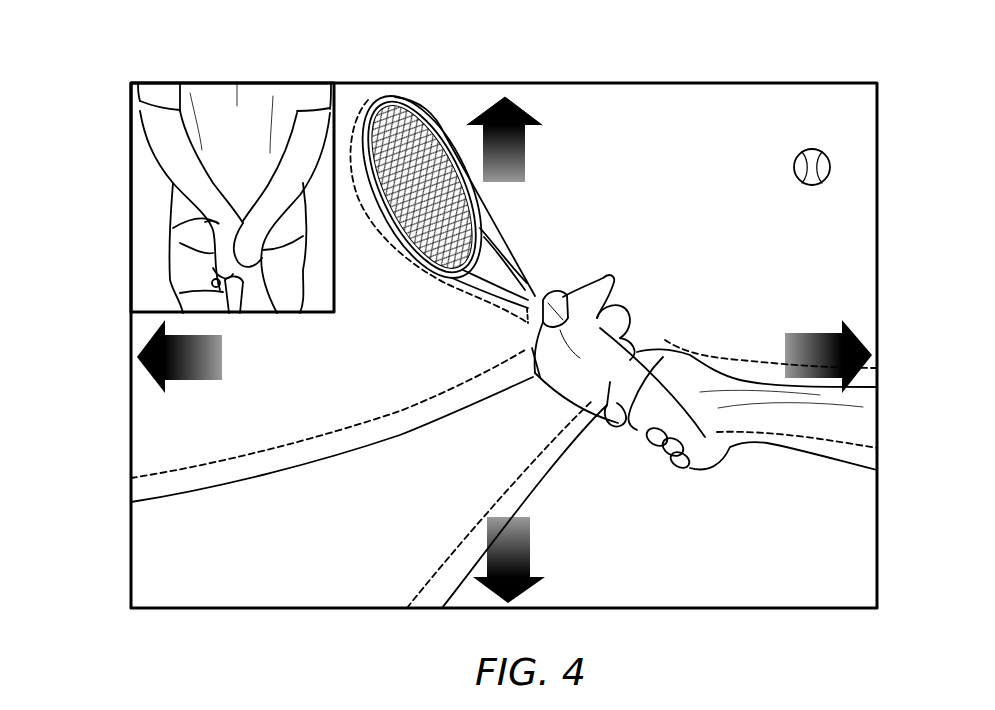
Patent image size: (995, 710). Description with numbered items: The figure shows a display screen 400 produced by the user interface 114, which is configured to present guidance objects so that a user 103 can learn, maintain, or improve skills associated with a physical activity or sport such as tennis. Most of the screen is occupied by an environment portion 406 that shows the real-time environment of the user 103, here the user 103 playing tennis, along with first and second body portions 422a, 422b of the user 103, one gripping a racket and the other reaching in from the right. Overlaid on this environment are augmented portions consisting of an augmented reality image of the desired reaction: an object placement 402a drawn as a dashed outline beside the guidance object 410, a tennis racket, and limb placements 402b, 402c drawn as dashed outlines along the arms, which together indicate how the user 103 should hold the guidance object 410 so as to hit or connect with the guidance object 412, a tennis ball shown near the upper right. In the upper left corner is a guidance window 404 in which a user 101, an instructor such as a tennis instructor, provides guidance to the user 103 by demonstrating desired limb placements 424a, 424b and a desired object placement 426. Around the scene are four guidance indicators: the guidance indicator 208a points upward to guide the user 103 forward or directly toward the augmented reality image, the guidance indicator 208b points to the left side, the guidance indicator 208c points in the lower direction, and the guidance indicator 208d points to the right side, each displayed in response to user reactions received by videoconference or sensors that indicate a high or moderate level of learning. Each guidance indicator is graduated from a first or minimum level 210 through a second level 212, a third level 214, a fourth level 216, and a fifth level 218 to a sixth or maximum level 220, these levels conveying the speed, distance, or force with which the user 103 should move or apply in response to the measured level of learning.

The display screen 400 is at (196, 54).
The user 101 is at (238, 95).
The object placement 402a is at (360, 108).
The limb placement 402b is at (527, 478).
The limb placement 402c is at (763, 428).
The guidance object 410 is at (393, 99).
The guidance indicator 208a is at (482, 150).
The guidance indicator 208b is at (195, 382).
The guidance indicator 208c is at (532, 536).
The guidance indicator 208d is at (814, 333).
The sixth or maximum level 220 is at (522, 108).
The fifth level 218 is at (527, 140).
The fourth level 216 is at (527, 152).
The third level 214 is at (527, 160).
The second level 212 is at (527, 170).
The first or minimum level 210 is at (527, 182).
The user interface 114 is at (617, 83).
The guidance object 412 is at (812, 186).
The guidance window 404 is at (147, 182).
The desired limb placement 424a is at (215, 255).
The desired limb placement 424b is at (205, 222).
The desired object placement 426 is at (215, 290).
The first body portion 422a is at (535, 352).
The second body portion 422b is at (695, 388).
The user 103 is at (292, 495).
The environment portion 406 is at (668, 575).